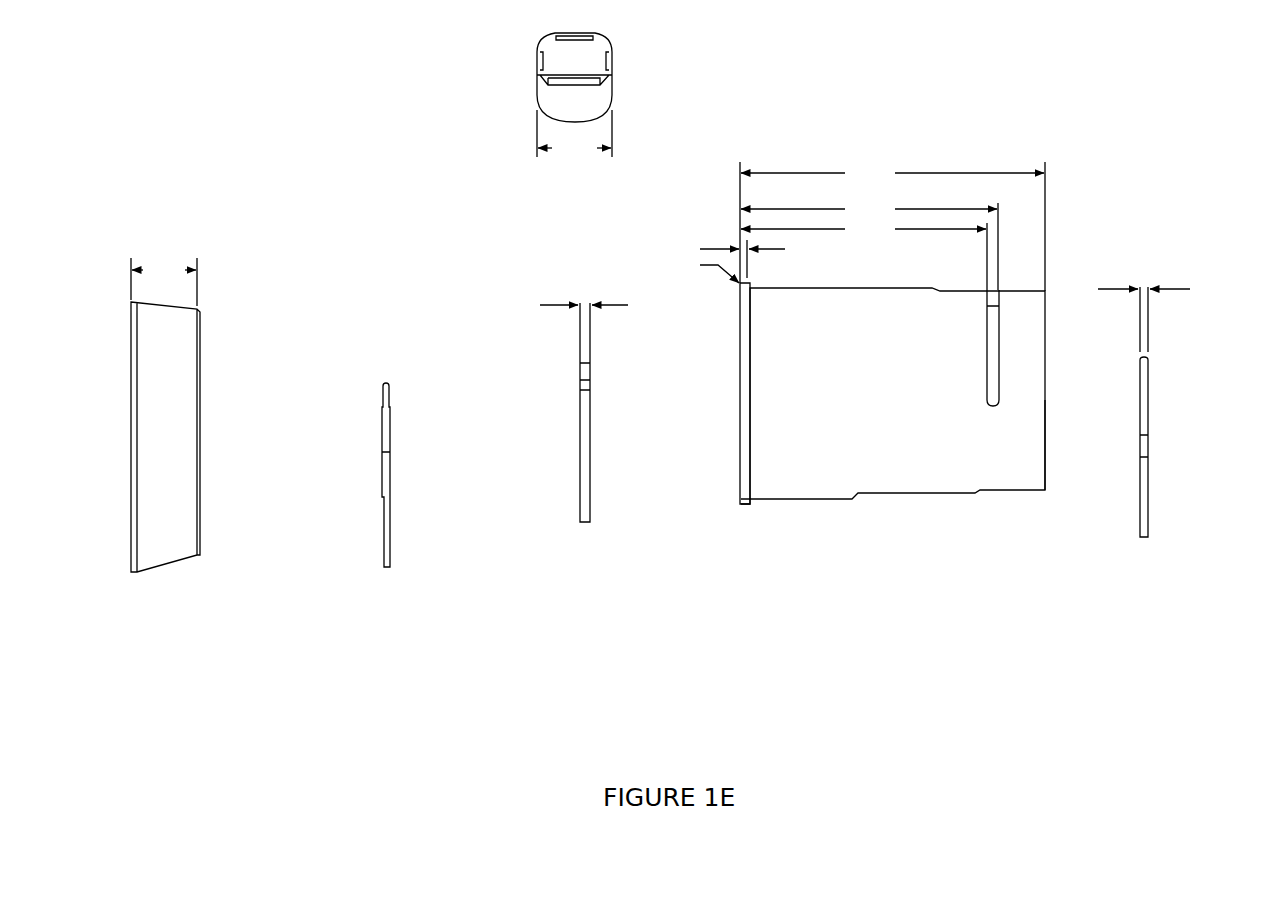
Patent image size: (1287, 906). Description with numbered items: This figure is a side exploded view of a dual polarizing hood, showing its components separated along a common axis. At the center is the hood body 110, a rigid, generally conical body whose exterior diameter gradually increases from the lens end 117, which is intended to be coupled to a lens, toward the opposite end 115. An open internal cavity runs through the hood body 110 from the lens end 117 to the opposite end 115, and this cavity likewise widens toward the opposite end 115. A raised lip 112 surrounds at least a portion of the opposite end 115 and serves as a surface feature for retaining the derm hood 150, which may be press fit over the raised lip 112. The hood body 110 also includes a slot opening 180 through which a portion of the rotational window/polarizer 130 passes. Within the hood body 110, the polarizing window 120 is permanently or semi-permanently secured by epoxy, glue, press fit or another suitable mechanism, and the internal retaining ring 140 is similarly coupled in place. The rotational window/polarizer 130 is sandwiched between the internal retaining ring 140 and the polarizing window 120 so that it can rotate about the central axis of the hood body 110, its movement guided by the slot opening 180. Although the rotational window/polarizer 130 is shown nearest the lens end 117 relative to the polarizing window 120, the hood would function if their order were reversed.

The hood body 110 is at (614, 78).
The raised lip 112 is at (741, 490).
The opposite end 115 is at (748, 506).
The lens end 117 is at (1048, 493).
The polarizing window 120 is at (1144, 540).
The rotational window/polarizer 130 is at (585, 525).
The internal retaining ring 140 is at (389, 570).
The derm hood 150 is at (165, 572).
The slot opening 180 is at (994, 410).